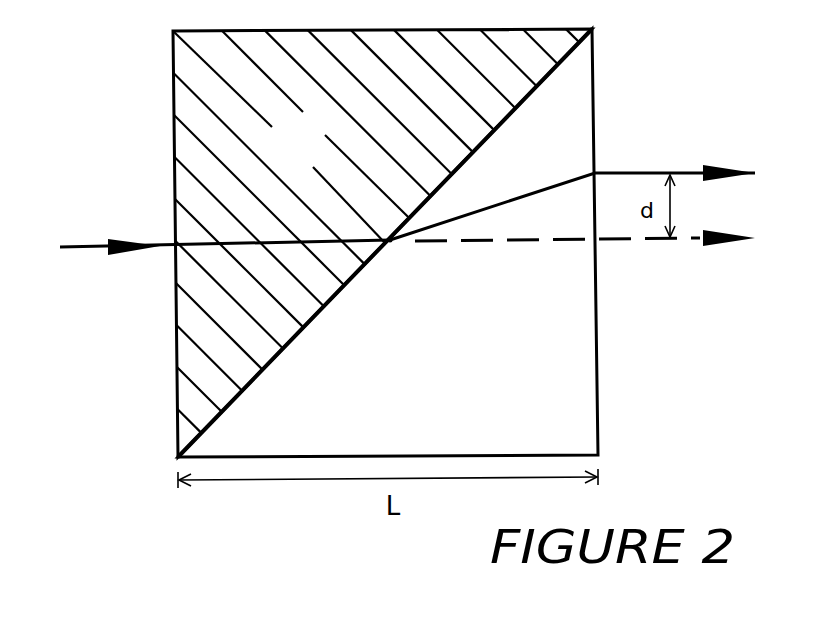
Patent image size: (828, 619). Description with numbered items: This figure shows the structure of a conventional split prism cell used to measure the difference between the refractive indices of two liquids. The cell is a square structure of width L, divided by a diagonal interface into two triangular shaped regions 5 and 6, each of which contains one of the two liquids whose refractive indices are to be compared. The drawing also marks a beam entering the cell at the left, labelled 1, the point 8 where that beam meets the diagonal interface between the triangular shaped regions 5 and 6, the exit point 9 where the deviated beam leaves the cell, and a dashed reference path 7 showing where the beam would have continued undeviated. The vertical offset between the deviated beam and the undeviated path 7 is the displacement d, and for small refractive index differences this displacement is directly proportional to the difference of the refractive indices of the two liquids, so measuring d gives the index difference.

The incident light beam 1 is at (212, 248).
The triangular shaped region 5 is at (382, 243).
The triangular shaped region 6 is at (388, 243).
The undeviated beam path 7 is at (600, 239).
The point of incidence on interface 8 is at (393, 260).
The exit point of displaced beam 9 is at (572, 187).